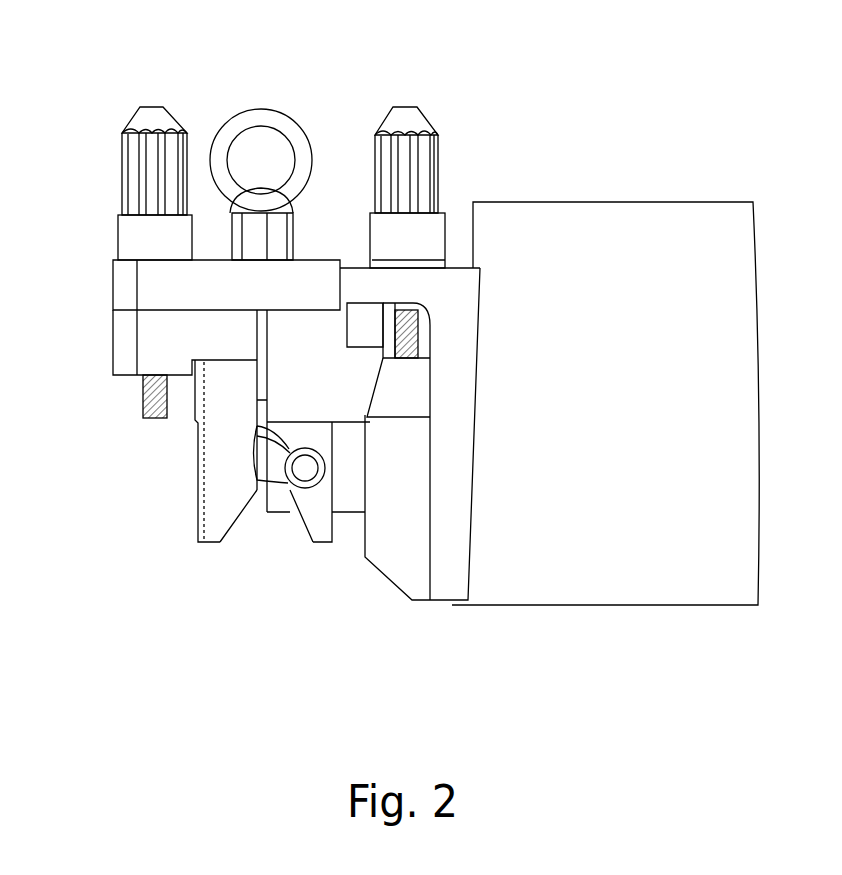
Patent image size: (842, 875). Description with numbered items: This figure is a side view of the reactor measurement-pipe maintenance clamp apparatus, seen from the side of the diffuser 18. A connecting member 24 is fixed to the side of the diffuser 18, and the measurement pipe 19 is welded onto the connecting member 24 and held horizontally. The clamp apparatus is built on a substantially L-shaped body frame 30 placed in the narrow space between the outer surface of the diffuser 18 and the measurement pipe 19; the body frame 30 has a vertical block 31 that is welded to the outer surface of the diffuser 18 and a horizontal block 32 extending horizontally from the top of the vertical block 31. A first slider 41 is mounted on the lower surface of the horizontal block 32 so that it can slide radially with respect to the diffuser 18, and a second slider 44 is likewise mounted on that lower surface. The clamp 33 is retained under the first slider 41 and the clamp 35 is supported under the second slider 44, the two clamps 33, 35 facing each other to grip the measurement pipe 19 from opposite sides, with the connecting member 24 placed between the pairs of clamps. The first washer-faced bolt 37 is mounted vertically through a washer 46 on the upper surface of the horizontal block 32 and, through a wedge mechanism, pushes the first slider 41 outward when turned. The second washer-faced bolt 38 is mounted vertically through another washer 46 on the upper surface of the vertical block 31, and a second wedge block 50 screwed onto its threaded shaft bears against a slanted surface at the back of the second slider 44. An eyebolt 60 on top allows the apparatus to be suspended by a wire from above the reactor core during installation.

The first washer-faced bolt 37 is at (160, 107).
The eyebolt 60 is at (273, 108).
The second washer-faced bolt 38 is at (408, 105).
The washer 46 is at (125, 242).
The horizontal block 32 is at (300, 280).
The first slider 41 is at (127, 369).
The second slider 44 is at (322, 340).
The second wedge block 50 is at (430, 385).
The vertical block 31 is at (458, 470).
The body frame 30 is at (402, 536).
The diffuser 18 is at (560, 606).
The clamp 33 is at (212, 545).
The connecting member 24 is at (268, 508).
The clamp 35 is at (320, 538).
The measurement pipe 19 is at (255, 470).